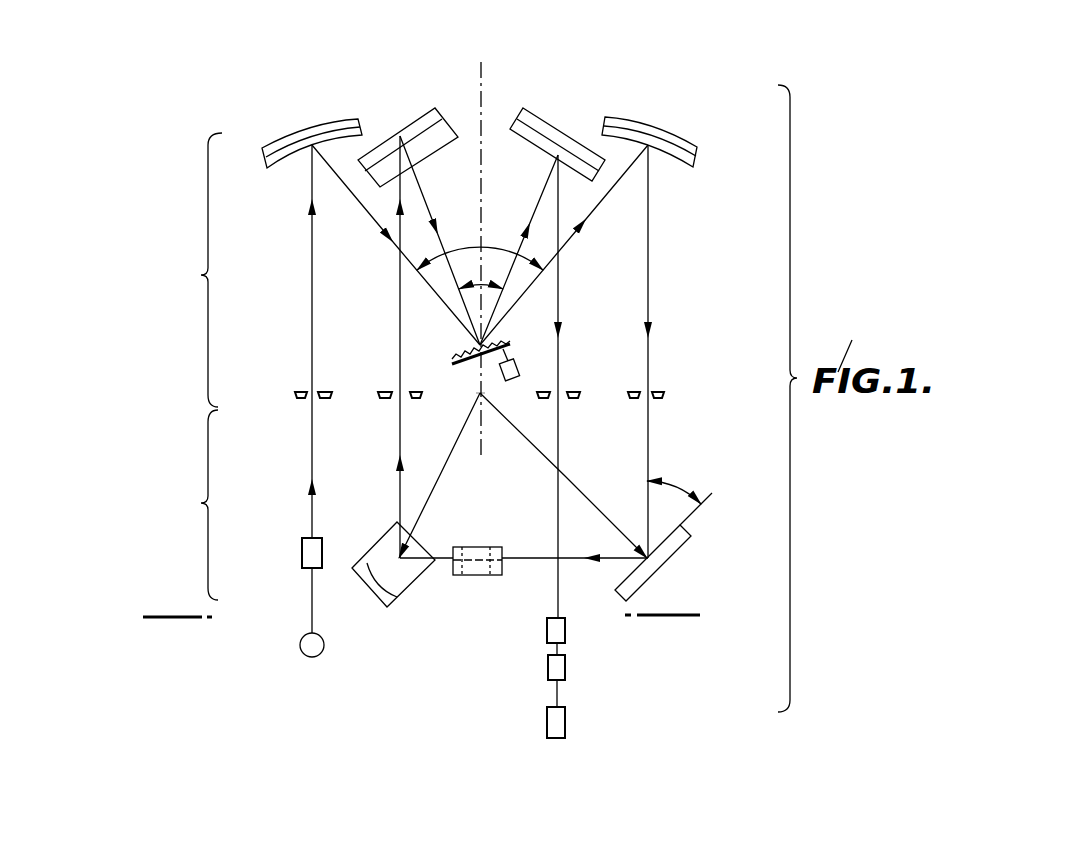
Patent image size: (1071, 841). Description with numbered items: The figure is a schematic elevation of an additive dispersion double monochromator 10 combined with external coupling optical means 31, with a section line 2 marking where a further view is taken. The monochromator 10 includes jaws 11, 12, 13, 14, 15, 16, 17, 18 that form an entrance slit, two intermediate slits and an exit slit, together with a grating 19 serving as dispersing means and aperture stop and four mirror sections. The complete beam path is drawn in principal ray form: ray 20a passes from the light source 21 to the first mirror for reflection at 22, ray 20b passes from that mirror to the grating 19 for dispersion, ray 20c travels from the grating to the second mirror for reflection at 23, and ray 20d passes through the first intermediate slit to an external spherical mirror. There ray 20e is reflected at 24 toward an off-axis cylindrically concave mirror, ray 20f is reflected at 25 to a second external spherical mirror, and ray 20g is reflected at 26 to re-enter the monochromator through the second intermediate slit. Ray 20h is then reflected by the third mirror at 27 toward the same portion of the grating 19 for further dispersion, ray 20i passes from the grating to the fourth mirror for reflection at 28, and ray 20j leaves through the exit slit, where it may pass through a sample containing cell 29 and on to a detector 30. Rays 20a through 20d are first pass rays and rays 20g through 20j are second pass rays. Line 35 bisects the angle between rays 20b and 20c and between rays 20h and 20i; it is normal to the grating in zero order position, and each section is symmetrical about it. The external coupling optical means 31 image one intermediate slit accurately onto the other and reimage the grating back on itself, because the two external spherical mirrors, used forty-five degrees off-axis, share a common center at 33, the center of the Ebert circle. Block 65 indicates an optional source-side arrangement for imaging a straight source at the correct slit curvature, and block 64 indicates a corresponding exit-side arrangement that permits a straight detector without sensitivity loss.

The monochromator 10 is at (124, 270).
The external coupling optical means 31 is at (135, 505).
The section line 2 is at (417, 652).
The line 35 is at (483, 65).
The reflection point on mirror M1 22 is at (308, 146).
The reflection point on mirror M3 27 is at (414, 132).
The reflection point on mirror M4 28 is at (556, 123).
The reflection point on mirror M2 23 is at (664, 157).
The grating 19 is at (455, 350).
The center of Ebert circle 33 is at (480, 394).
The ray 20a is at (312, 320).
The ray 20b is at (375, 220).
The ray 20c is at (596, 208).
The ray 20d is at (648, 283).
The ray 20e is at (565, 558).
The ray 20f is at (442, 558).
The ray 20g is at (400, 305).
The ray 20h is at (419, 186).
The ray 20i is at (538, 196).
The ray 20j is at (558, 291).
The jaw 11 is at (296, 396).
The jaw 12 is at (337, 394).
The jaw 13 is at (376, 395).
The jaw 14 is at (413, 400).
The jaw 15 is at (539, 399).
The jaw 16 is at (584, 391).
The jaw 17 is at (631, 392).
The jaw 18 is at (676, 391).
The reflection point on mirror M2c 26 is at (389, 590).
The reflection point on mirror M2b 25 is at (499, 579).
The reflection point on mirror M2a 24 is at (671, 545).
The block 65 is at (302, 560).
The light source 21 is at (303, 655).
The block 64 is at (567, 634).
The sample containing cell 29 is at (548, 673).
The detector 30 is at (567, 723).